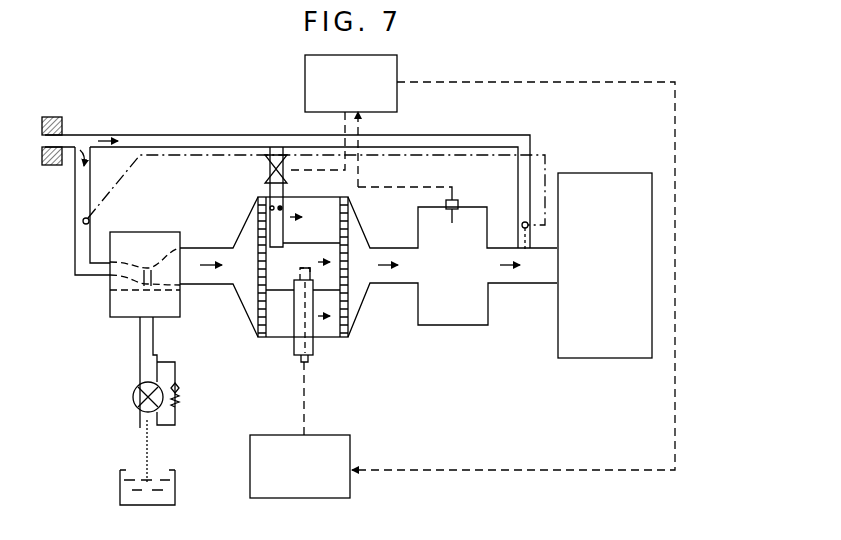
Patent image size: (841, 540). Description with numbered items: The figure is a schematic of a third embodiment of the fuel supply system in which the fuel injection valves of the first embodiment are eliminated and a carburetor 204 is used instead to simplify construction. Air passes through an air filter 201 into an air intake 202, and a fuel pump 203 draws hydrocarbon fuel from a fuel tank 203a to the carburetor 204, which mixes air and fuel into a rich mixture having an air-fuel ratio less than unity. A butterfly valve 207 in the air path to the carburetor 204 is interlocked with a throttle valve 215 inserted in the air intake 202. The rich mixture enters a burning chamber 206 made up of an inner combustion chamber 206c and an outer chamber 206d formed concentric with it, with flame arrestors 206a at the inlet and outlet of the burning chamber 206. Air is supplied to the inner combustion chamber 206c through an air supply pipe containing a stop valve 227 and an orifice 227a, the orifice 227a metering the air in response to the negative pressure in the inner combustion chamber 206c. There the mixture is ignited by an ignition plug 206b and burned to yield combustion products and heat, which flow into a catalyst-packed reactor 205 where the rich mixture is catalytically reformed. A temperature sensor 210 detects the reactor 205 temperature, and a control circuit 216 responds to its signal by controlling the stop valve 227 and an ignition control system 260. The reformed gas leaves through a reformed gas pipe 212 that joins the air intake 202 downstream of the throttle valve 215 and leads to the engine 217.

The air filter 201 is at (52, 117).
The air intake 202 is at (163, 133).
The fuel pump 203 is at (133, 397).
The fuel tank 203a is at (120, 485).
The carburetor 204 is at (110, 300).
The reactor 205 is at (452, 325).
The burning chamber 206 is at (326, 340).
The flame arrestors 206a is at (258, 300).
The ignition plug 206b is at (305, 364).
The inner combustion chamber 206c is at (284, 292).
The outer chamber 206d is at (300, 212).
The butterfly valve 207 is at (90, 220).
The temperature sensor 210 is at (440, 204).
The reformed gas pipe 212 is at (521, 284).
The throttle valve 215 is at (522, 223).
The control circuit 216 is at (398, 72).
The engine 217 is at (598, 358).
The stop valve 227 is at (265, 171).
The orifice 227a is at (270, 212).
The ignition control system 260 is at (250, 466).